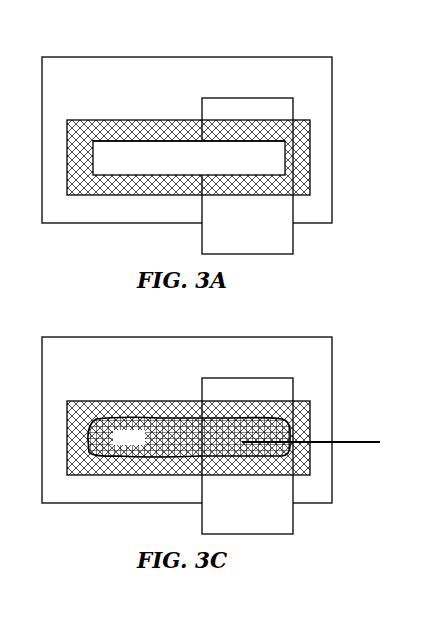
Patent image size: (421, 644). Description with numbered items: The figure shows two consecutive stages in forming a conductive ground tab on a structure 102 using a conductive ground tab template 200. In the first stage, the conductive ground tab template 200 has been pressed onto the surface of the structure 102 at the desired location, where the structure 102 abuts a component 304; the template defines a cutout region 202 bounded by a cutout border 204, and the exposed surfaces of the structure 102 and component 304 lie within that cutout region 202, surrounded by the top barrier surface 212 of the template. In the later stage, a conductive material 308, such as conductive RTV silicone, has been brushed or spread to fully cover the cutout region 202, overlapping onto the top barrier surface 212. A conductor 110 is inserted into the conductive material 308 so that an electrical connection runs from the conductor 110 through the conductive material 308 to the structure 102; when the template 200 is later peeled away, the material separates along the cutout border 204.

In FIG. 3A, the structure 102 is at (323, 108).
In FIG. 3C, the structure 102 is at (323, 388).
In FIG. 3C, the conductor 110 is at (344, 446).
In FIG. 3A, the conductive ground tab template 200 is at (219, 139).
In FIG. 3C, the conductive ground tab template 200 is at (193, 425).
In FIG. 3A, the cutout region 202 is at (145, 165).
In FIG. 3C, the cutout region 202 is at (141, 445).
In FIG. 3A, the cutout border 204 is at (255, 141).
In FIG. 3A, the top barrier surface 212 is at (300, 157).
In FIG. 3C, the top barrier surface 212 is at (305, 408).
In FIG. 3A, the component 304 is at (277, 231).
In FIG. 3C, the component 304 is at (277, 511).
In FIG. 3C, the conductive material 308 is at (90, 437).